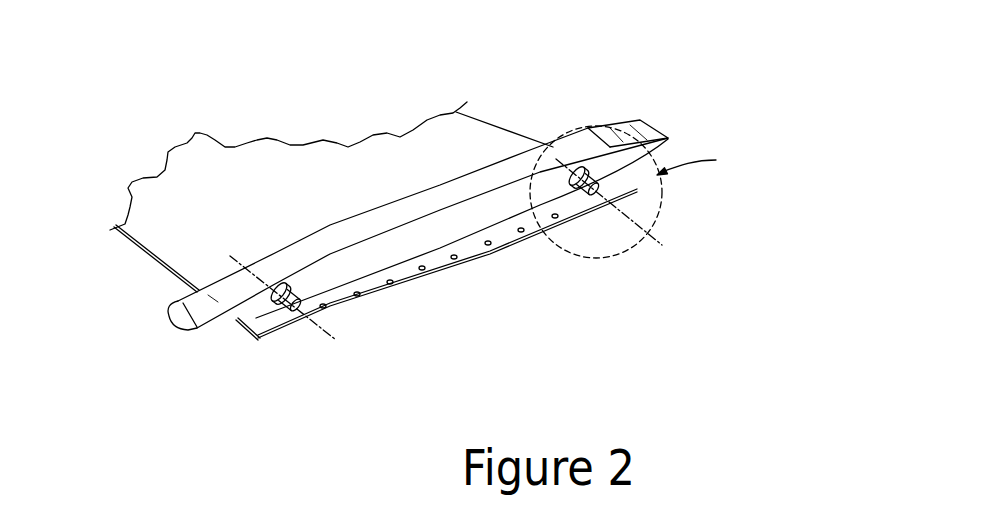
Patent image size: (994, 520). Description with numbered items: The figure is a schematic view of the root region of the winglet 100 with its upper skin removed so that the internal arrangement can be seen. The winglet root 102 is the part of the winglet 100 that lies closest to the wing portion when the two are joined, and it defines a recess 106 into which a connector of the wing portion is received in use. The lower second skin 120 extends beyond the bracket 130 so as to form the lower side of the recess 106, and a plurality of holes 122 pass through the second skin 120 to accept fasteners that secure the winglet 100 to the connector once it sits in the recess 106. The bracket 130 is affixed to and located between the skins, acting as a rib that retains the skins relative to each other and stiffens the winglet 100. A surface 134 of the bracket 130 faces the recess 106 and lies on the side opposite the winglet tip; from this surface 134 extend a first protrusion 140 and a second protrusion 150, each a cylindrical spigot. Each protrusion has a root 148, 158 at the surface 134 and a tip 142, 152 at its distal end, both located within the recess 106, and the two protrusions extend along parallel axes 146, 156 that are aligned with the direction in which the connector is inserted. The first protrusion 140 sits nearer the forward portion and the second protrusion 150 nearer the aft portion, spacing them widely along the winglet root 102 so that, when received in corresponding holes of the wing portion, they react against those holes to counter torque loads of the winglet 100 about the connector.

The winglet 100 is at (645, 78).
The winglet root 102 is at (278, 338).
The recess 106 is at (389, 254).
The lower second skin 120 is at (170, 248).
The holes 122 is at (464, 259).
The bracket 130 is at (658, 125).
The surface of the bracket 134 is at (213, 323).
The first protrusion 140 is at (659, 194).
The tip of the first protrusion 142 is at (602, 189).
The axis of the first protrusion 146 is at (661, 241).
The root of the first protrusion 148 is at (576, 164).
The second protrusion 150 is at (281, 292).
The tip of the second protrusion 152 is at (287, 302).
The axis of the second protrusion 156 is at (338, 332).
The root of the second protrusion 158 is at (281, 282).